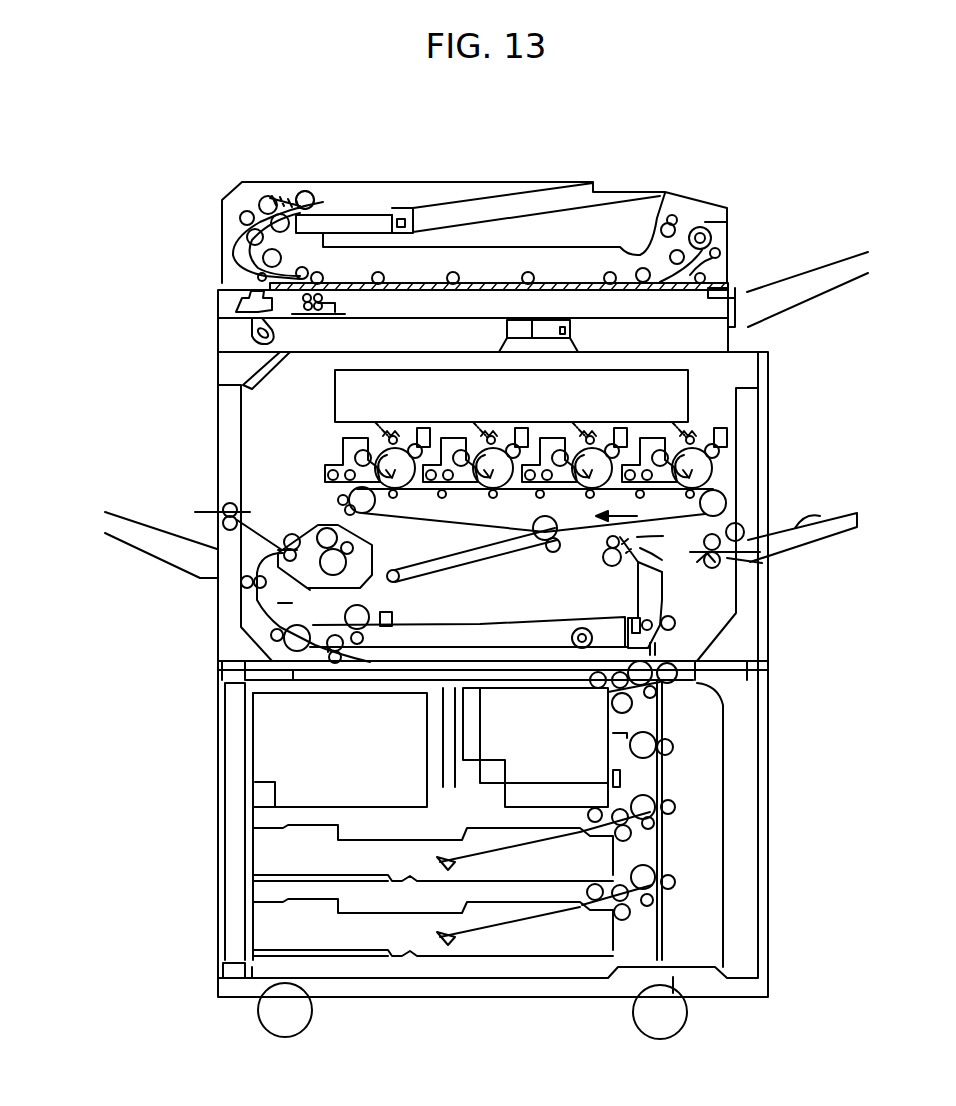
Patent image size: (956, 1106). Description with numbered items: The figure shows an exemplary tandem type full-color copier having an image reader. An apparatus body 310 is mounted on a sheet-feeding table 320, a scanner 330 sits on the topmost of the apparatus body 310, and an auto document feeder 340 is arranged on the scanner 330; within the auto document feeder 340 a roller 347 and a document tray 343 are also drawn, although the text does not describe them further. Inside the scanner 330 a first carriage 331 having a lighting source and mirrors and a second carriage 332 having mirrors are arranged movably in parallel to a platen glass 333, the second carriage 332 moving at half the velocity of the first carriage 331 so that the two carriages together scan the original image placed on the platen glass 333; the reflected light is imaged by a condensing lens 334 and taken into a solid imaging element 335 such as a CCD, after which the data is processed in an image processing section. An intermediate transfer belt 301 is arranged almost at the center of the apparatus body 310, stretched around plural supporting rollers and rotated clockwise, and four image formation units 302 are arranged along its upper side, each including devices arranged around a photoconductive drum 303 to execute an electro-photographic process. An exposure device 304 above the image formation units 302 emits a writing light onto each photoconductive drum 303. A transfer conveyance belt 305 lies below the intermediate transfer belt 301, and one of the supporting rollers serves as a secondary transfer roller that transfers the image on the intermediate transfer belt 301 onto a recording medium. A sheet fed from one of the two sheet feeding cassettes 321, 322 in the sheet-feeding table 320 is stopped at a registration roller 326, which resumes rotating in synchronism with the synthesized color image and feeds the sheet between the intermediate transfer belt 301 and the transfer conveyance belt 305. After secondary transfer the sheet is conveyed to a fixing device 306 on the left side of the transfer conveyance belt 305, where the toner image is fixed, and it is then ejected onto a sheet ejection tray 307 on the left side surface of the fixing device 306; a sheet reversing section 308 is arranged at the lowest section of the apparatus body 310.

The auto document feeder 340 is at (212, 210).
The roller 347 is at (310, 192).
The document tray 343 is at (367, 213).
The platen glass 333 is at (547, 283).
The scanner 330 is at (218, 303).
The first carriage 331 is at (313, 317).
The second carriage 332 is at (245, 326).
The condensing lens 334 is at (507, 326).
The solid imaging element 335 is at (570, 330).
The apparatus body 310 is at (208, 420).
The exposure device 304 is at (688, 386).
The image formation units 302 is at (326, 448).
The photoconductive drum 303 is at (403, 480).
The intermediate transfer belt 301 is at (488, 528).
The transfer conveyance belt 305 is at (457, 572).
The fixing device 306 is at (343, 517).
The sheet ejection tray 307 is at (162, 550).
The sheet reversing section 308 is at (493, 660).
The registration roller 326 is at (610, 567).
The sheet-feeding table 320 is at (207, 792).
The sheet feeding cassette 321 is at (262, 855).
The sheet feeding cassette 322 is at (262, 930).